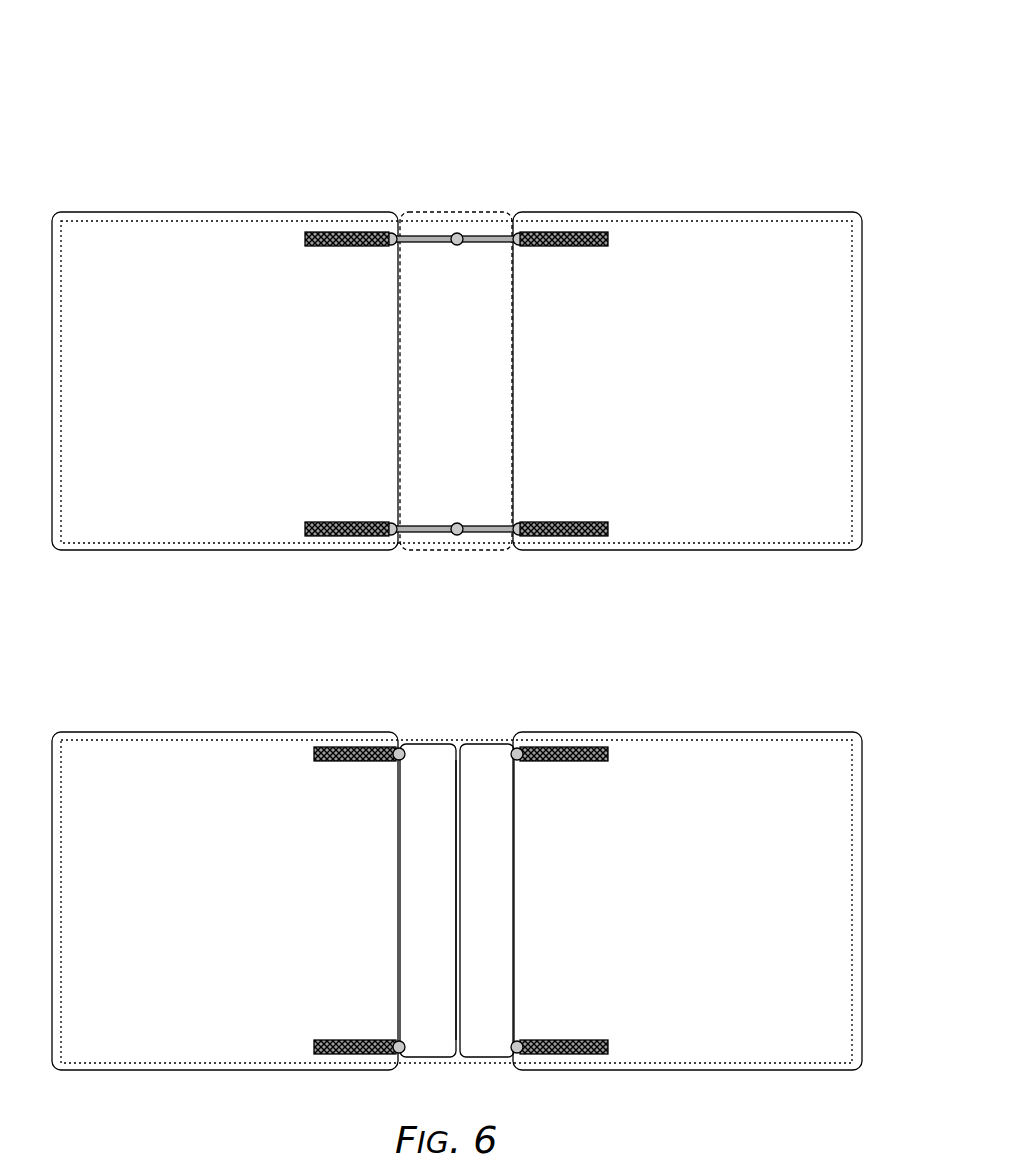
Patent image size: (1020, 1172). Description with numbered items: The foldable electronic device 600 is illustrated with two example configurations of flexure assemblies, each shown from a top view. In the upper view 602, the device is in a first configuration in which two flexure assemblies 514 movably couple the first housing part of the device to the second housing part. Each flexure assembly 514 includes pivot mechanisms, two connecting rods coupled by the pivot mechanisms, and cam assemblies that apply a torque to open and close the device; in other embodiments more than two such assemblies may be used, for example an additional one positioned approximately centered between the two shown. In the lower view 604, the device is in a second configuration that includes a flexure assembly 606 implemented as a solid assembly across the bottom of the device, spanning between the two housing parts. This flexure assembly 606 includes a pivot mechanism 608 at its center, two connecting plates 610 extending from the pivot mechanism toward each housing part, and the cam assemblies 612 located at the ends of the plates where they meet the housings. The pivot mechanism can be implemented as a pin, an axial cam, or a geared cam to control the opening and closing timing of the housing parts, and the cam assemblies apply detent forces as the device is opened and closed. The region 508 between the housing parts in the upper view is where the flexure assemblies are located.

The foldable electronic device 600 is at (731, 80).
The top view in first configuration 602 is at (352, 162).
The top view in second configuration 604 is at (352, 682).
The hinge region 508 is at (482, 210).
The flexure assembly 514 is at (425, 258).
The flexure assembly 606 is at (414, 862).
The pivot mechanism 608 is at (466, 747).
The connecting plates 610 is at (413, 933).
The cam assemblies 612 is at (350, 764).